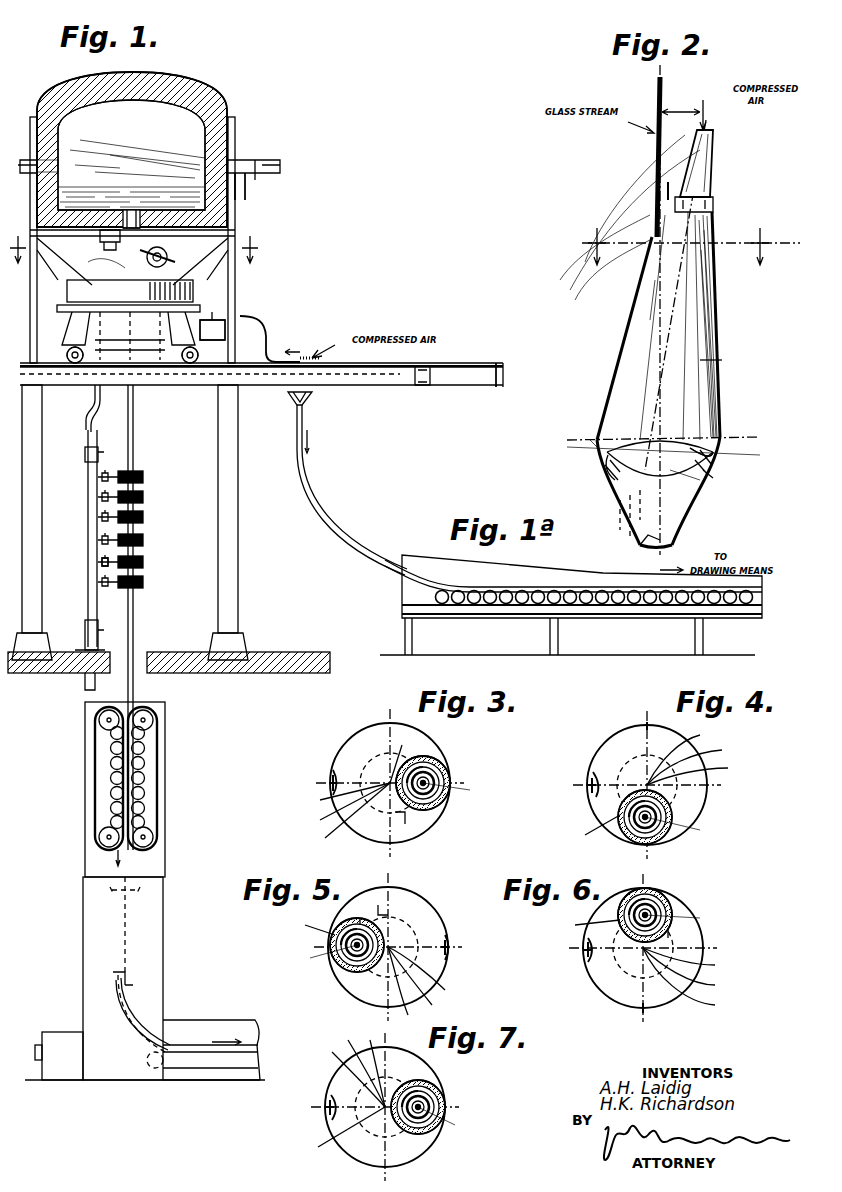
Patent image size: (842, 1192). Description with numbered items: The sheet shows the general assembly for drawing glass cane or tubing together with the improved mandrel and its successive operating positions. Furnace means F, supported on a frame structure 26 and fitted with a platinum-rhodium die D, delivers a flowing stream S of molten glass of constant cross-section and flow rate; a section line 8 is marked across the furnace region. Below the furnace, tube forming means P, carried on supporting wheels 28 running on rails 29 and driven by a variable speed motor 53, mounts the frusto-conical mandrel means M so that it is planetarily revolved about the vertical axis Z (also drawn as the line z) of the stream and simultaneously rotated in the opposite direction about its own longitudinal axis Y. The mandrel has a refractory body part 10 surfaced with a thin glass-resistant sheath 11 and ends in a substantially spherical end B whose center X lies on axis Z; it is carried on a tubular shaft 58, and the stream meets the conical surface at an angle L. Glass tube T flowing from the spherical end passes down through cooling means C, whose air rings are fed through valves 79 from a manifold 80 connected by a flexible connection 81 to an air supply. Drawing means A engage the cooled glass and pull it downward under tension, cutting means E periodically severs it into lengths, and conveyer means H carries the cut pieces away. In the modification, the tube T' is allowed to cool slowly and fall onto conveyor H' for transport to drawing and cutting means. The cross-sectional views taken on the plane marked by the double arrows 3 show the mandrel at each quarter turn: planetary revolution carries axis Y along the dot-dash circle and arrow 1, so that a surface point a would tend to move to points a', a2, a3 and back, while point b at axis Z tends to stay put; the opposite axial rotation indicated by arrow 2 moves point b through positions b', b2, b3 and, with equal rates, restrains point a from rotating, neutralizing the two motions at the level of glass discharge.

In FIG. 1, the furnace means F is at (225, 88).
In FIG. 1, the frame structure 26 is at (240, 205).
In FIG. 1, the section line 8 is at (137, 261).
In FIG. 1, the stream S is at (102, 266).
In FIG. 2, the stream S is at (655, 152).
In FIG. 3, the stream S is at (345, 797).
In FIG. 4, the stream S is at (694, 770).
In FIG. 5, the stream S is at (402, 988).
In FIG. 6, the stream S is at (686, 981).
In FIG. 7, the stream S is at (373, 1063).
In FIG. 1, the die D is at (118, 247).
In FIG. 1, the tube forming means P is at (275, 318).
In FIG. 1, the rails 29 is at (498, 366).
In FIG. 1, the supporting wheels 28 is at (190, 363).
In FIG. 1, the flexible connection 81 is at (97, 405).
In FIG. 1, the variable speed motor 53 is at (240, 370).
In FIG. 1, the mandrel means M is at (308, 410).
In FIG. 2, the mandrel means M is at (722, 360).
In FIG. 1, the flexible tube T' is at (352, 490).
In FIG. 1, the glass cane or tube T is at (149, 617).
In FIG. 1, the cooling means C is at (143, 477).
In FIG. 1, the manifold 80 is at (88, 545).
In FIG. 1, the valves 79 is at (98, 580).
In FIG. 1, the drawing means A is at (84, 855).
In FIG. 1, the cutting means E is at (83, 965).
In FIG. 1, the conveyer means H is at (203, 1033).
In FIG. 1A, the conveyor H' is at (571, 605).
In FIG. 2, the angle L is at (681, 101).
In FIG. 2, the point b is at (671, 181).
In FIG. 3, the point b is at (400, 754).
In FIG. 7, the point b is at (343, 1131).
In FIG. 2, the tubular shaft 58 is at (715, 160).
In FIG. 3, the tubular shaft 58 is at (440, 768).
In FIG. 4, the tubular shaft 58 is at (672, 812).
In FIG. 5, the tubular shaft 58 is at (345, 965).
In FIG. 6, the tubular shaft 58 is at (672, 905).
In FIG. 7, the tubular shaft 58 is at (440, 1092).
In FIG. 2, the double arrows 3 is at (682, 256).
In FIG. 3, the double arrows 3 is at (333, 772).
In FIG. 4, the double arrows 3 is at (594, 772).
In FIG. 5, the double arrows 3 is at (447, 958).
In FIG. 6, the double arrows 3 is at (588, 955).
In FIG. 7, the double arrows 3 is at (331, 1097).
In FIG. 2, the vertical axis Z is at (655, 300).
In FIG. 4, the vertical axis Z is at (691, 762).
In FIG. 5, the vertical axis Z is at (416, 980).
In FIG. 6, the vertical axis Z is at (686, 971).
In FIG. 7, the vertical axis Z is at (351, 1070).
In FIG. 2, the longitudinal axis Y is at (700, 300).
In FIG. 3, the longitudinal axis Y is at (445, 790).
In FIG. 4, the longitudinal axis Y is at (672, 832).
In FIG. 5, the longitudinal axis Y is at (332, 957).
In FIG. 6, the longitudinal axis Y is at (675, 920).
In FIG. 7, the longitudinal axis Y is at (440, 1128).
In FIG. 2, the center X is at (655, 440).
In FIG. 3, the center X is at (349, 816).
In FIG. 4, the center X is at (679, 754).
In FIG. 5, the center X is at (425, 973).
In FIG. 6, the center X is at (686, 961).
In FIG. 2, the point a is at (581, 455).
In FIG. 3, the point a is at (317, 771).
In FIG. 4, the point a is at (576, 772).
In FIG. 6, the point a is at (576, 943).
In FIG. 7, the point a is at (314, 1113).
In FIG. 2, the sheath 11 is at (685, 463).
In FIG. 2, the spherical end B is at (722, 400).
In FIG. 2, the body part 10 is at (708, 480).
In FIG. 3, the arrow 2 is at (425, 760).
In FIG. 5, the arrow 2 is at (360, 920).
In FIG. 6, the arrow 2 is at (660, 905).
In FIG. 3, the vertical axis z is at (345, 807).
In FIG. 3, the dot-dash circle and arrow 1 is at (404, 825).
In FIG. 5, the dot-dash circle and arrow 1 is at (381, 899).
In FIG. 6, the dot-dash circle and arrow 1 is at (670, 935).
In FIG. 4, the point a' is at (632, 713).
In FIG. 4, the point b' is at (596, 830).
In FIG. 5, the point b2 is at (315, 922).
In FIG. 5, the point a2 is at (447, 945).
In FIG. 6, the point b3 is at (589, 924).
In FIG. 6, the point a3 is at (645, 1010).